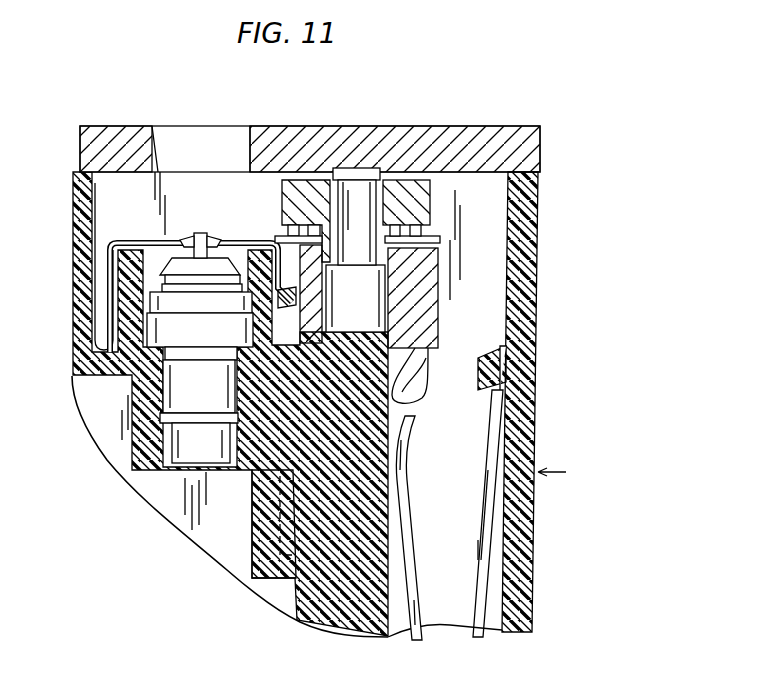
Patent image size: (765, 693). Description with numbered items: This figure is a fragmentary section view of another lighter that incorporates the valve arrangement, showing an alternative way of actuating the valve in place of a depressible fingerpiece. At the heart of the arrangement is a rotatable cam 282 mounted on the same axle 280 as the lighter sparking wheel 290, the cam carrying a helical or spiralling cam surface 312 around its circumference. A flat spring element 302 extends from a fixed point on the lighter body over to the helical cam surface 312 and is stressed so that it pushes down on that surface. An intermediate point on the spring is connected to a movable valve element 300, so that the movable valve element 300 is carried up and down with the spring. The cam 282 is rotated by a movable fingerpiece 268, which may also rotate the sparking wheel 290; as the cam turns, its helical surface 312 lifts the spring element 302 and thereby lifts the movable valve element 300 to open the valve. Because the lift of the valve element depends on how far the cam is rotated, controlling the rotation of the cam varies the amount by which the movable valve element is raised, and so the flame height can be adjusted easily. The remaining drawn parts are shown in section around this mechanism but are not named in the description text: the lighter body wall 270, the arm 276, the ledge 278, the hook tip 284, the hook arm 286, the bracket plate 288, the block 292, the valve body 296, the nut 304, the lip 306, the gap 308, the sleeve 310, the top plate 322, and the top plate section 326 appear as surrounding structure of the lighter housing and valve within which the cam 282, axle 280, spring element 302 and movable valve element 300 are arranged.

The movable fingerpiece 268 is at (536, 494).
The housing side wall 270 is at (536, 280).
The spring arm 276 is at (487, 575).
The ledge 278 is at (497, 340).
The axle 280 is at (358, 176).
The rotatable cam 282 is at (388, 258).
The hook tip 284 is at (408, 396).
The hook arm 286 is at (423, 360).
The bracket plate 288 is at (300, 241).
The sparking wheel 290 is at (283, 204).
The block 292 is at (440, 268).
The valve body 296 is at (167, 383).
The movable valve element 300 is at (200, 238).
The flat spring element 302 is at (141, 245).
The nut 304 is at (214, 240).
The seal lip 306 is at (112, 270).
The gap 308 is at (103, 253).
The sleeve 310 is at (288, 296).
The helical cam surface 312 is at (278, 310).
The top plate 322 is at (305, 126).
The top plate section 326 is at (405, 130).